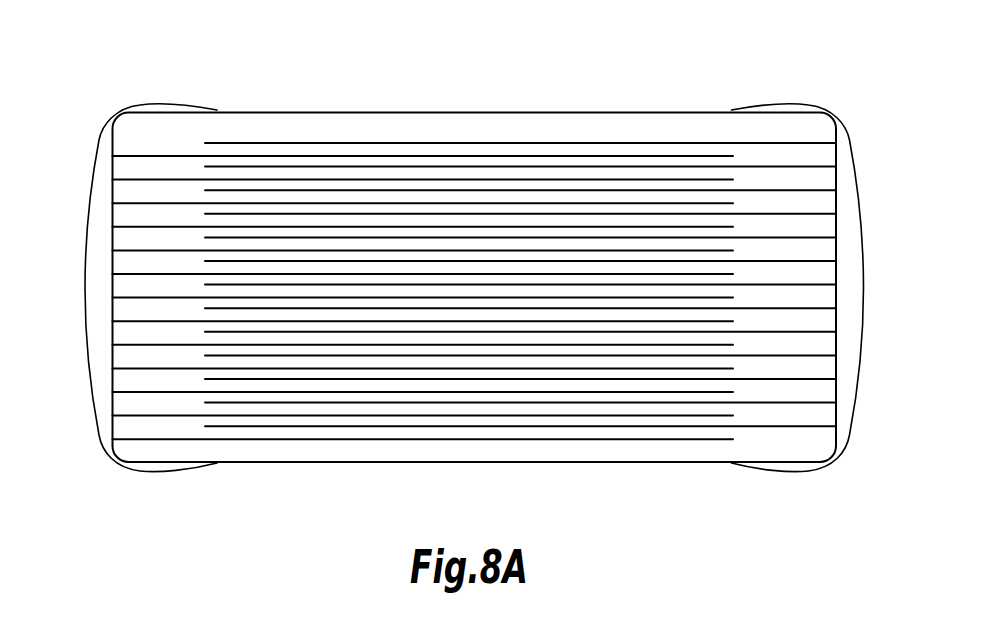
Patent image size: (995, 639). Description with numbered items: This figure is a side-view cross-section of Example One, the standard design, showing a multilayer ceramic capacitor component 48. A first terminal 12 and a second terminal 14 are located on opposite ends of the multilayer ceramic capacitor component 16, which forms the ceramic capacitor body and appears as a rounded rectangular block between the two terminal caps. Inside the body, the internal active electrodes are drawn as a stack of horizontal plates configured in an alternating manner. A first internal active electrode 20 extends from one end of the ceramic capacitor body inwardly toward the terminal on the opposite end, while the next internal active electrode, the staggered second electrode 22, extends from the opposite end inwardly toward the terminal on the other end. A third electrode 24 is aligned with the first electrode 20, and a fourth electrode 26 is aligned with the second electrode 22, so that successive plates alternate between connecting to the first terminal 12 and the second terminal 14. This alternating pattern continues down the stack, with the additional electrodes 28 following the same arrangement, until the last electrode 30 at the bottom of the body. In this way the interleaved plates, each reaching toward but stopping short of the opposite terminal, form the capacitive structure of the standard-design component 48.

The multilayer ceramic capacitor component 48 is at (690, 52).
The first terminal 12 is at (148, 105).
The second terminal 14 is at (813, 105).
The multilayer ceramic capacitor component 16 is at (395, 112).
The first internal active electrode 20 is at (544, 143).
The second electrode 22 is at (150, 155).
The third electrode 24 is at (813, 167).
The fourth electrode 26 is at (138, 180).
The second electrode 28 is at (803, 427).
The last electrode 30 is at (130, 438).